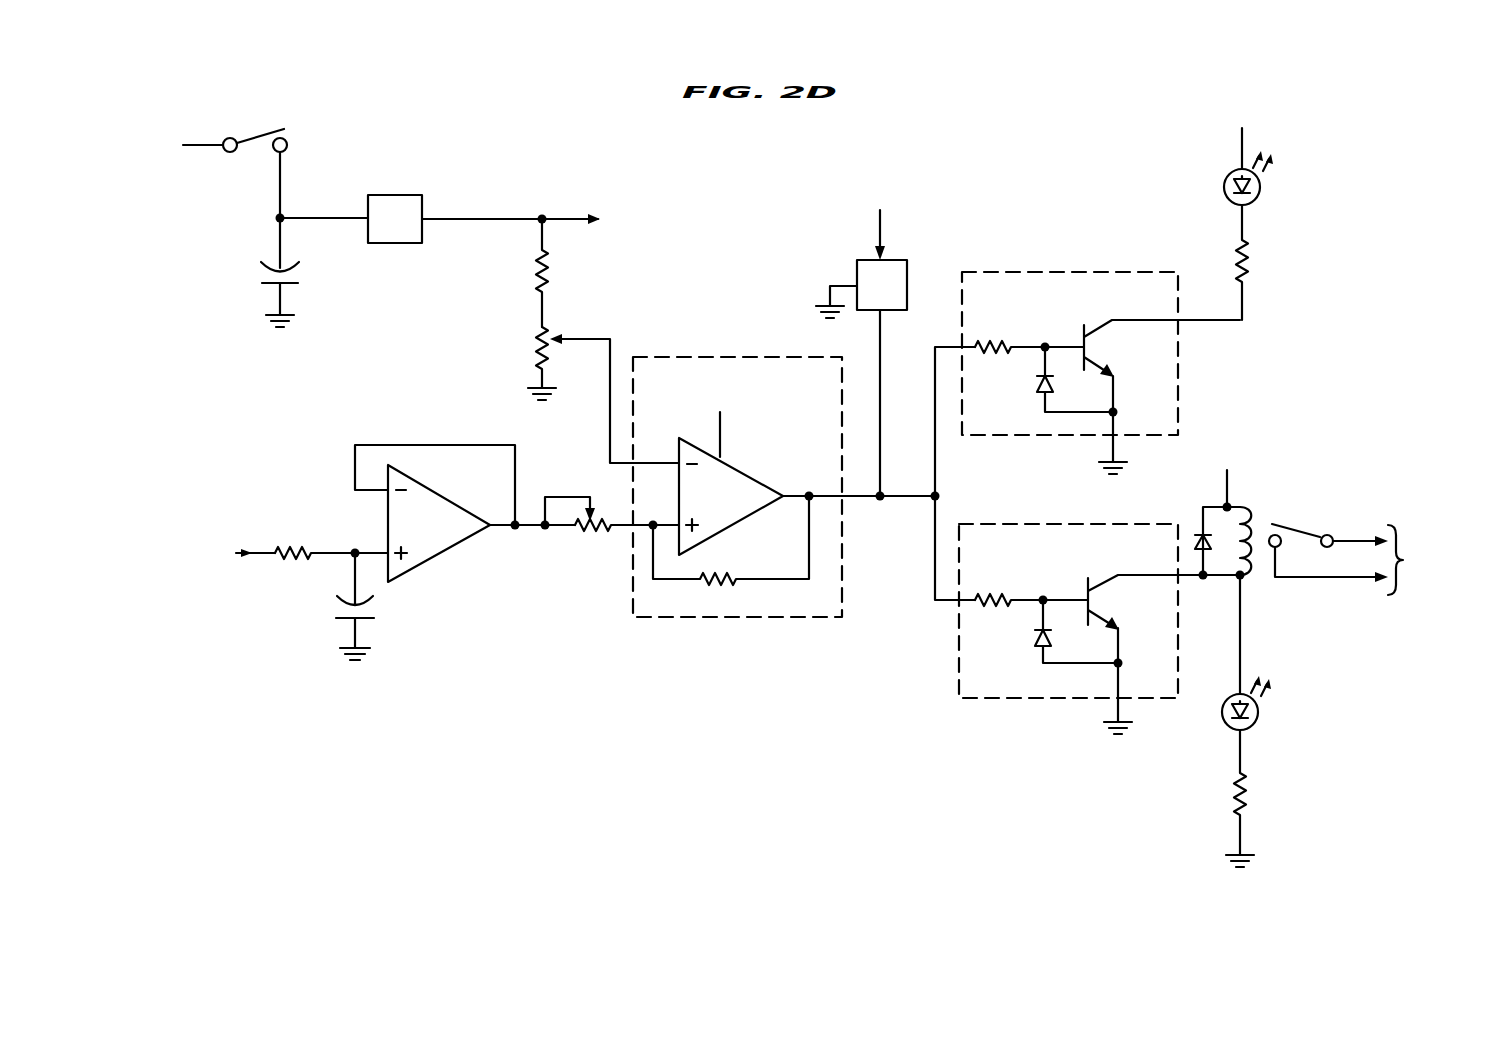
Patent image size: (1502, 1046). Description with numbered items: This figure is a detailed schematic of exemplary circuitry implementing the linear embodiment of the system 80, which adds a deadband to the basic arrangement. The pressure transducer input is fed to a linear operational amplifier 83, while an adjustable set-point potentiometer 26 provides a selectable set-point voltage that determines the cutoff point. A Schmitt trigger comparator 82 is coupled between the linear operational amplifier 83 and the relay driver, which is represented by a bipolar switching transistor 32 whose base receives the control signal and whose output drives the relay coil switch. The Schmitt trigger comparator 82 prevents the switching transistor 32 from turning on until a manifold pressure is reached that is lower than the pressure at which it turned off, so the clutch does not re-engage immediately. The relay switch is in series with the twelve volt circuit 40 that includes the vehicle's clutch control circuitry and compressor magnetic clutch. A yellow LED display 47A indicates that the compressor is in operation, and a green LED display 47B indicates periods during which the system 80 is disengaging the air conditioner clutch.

The system 80 is at (795, 477).
The adjustable set-point potentiometer 26 is at (568, 308).
The Schmitt trigger comparator 82 is at (690, 356).
The linear operational amplifier 83 is at (449, 511).
The switching transistor 32 is at (957, 650).
The 12 volt circuit 40 is at (1343, 580).
The yellow LED display 47A is at (1223, 189).
The green LED display 47B is at (1226, 727).